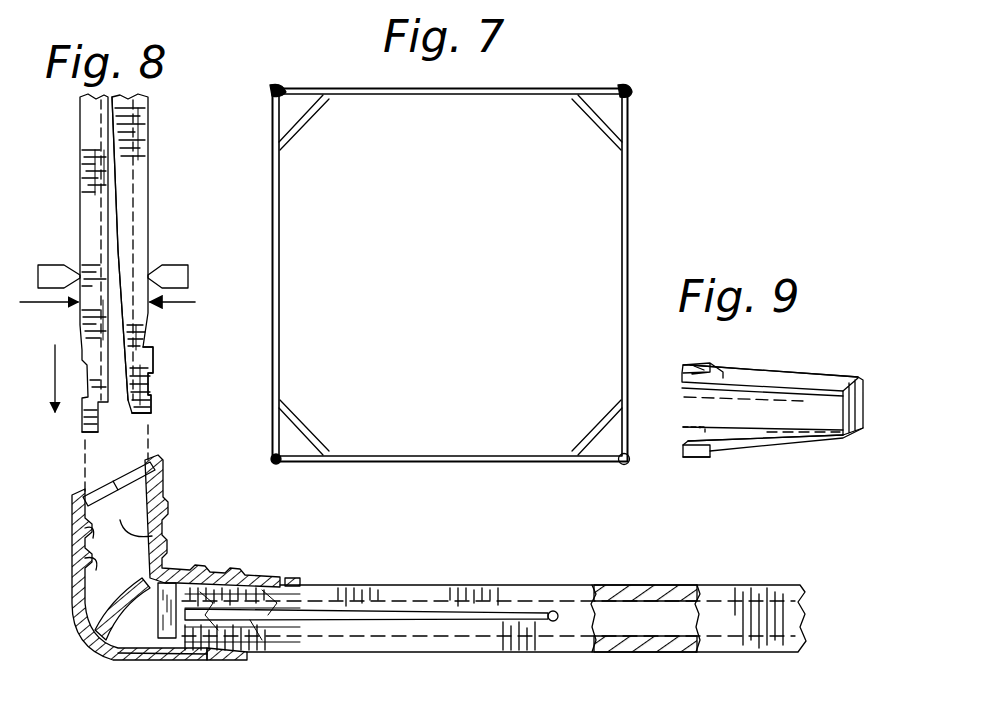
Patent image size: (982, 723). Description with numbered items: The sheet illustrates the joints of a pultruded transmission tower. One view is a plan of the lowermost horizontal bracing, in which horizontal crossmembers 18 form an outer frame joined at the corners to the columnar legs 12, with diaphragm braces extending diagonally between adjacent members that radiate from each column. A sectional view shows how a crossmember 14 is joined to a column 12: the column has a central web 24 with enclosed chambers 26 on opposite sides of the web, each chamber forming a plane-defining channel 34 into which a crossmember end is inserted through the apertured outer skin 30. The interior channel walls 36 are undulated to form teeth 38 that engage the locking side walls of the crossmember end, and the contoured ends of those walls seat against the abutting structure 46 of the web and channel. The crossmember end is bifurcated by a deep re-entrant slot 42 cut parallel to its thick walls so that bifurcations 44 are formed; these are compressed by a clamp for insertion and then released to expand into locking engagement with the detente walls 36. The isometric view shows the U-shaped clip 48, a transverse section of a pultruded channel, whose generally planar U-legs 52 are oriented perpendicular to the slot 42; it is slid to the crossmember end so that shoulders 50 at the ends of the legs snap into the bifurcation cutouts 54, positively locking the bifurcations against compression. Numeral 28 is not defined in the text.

In FIG. 7, the columnar leg 12 is at (275, 88).
In FIG. 8, the columnar leg 12 is at (72, 641).
In FIG. 8, the crossmember 14 is at (148, 173).
In FIG. 7, the horizontal crossmember 18 is at (628, 188).
In FIG. 8, the central web 24 is at (143, 658).
In FIG. 8, the chamber 26 is at (163, 528).
In FIG. 8, the connector horizontal arm 28 is at (232, 580).
In FIG. 8, the skin 30 is at (290, 578).
In FIG. 8, the plane-defining channel 34 is at (112, 479).
In FIG. 8, the interior channel wall 36 is at (100, 570).
In FIG. 8, the teeth 38 is at (72, 540).
In FIG. 8, the re-entrant slot 42 is at (113, 307).
In FIG. 8, the bifurcation 44 is at (83, 420).
In FIG. 8, the abutting structure 46 is at (143, 583).
In FIG. 9, the U-shaped clip 48 is at (797, 362).
In FIG. 8, the U-shaped clip 48 is at (145, 345).
In FIG. 9, the shoulder 50 is at (715, 362).
In FIG. 9, the U-leg 52 is at (762, 367).
In FIG. 8, the bifurcation cutout 54 is at (117, 402).